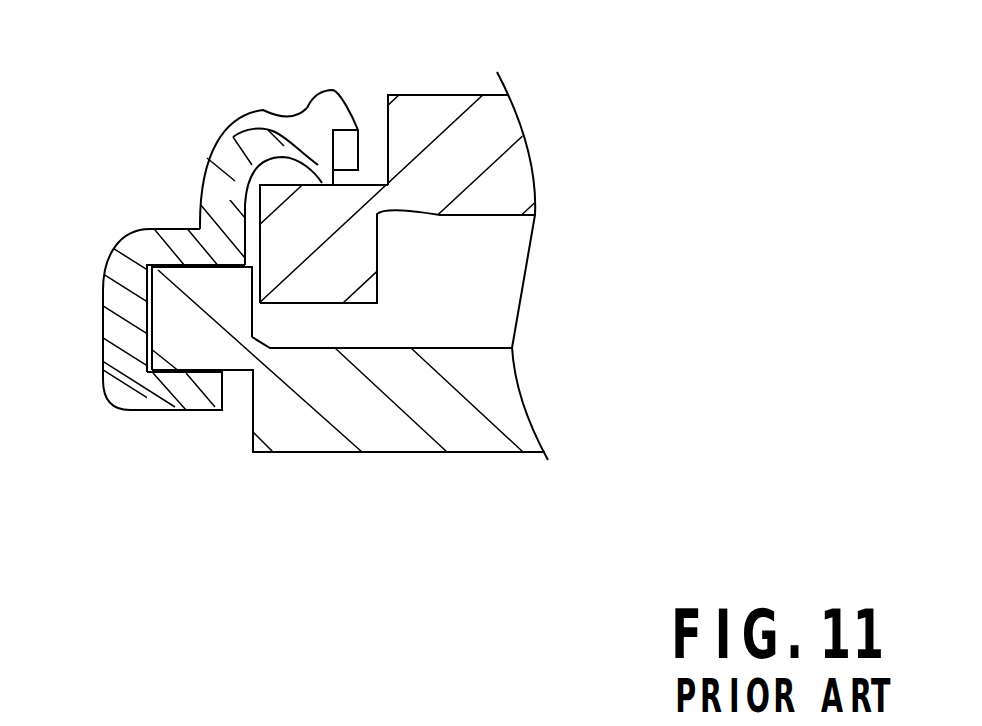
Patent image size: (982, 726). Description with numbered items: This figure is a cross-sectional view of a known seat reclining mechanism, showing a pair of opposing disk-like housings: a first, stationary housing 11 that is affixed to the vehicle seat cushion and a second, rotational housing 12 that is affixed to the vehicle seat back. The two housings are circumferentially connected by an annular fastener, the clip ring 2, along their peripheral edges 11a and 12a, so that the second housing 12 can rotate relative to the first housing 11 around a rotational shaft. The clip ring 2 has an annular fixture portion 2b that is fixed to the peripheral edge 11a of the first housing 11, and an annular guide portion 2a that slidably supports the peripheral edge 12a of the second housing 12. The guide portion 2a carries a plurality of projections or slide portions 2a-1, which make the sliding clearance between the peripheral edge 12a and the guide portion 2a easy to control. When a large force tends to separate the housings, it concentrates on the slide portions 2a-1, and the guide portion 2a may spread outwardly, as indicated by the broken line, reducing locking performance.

The clip ring 2 is at (120, 224).
The guide portion 2a is at (190, 193).
The slide portion 2a-1 is at (330, 138).
The fixture portion 2b is at (104, 317).
The first housing 11 is at (378, 461).
The peripheral edge of the first housing 11a is at (198, 350).
The second housing 12 is at (437, 87).
The peripheral edge of the second housing 12a is at (357, 260).